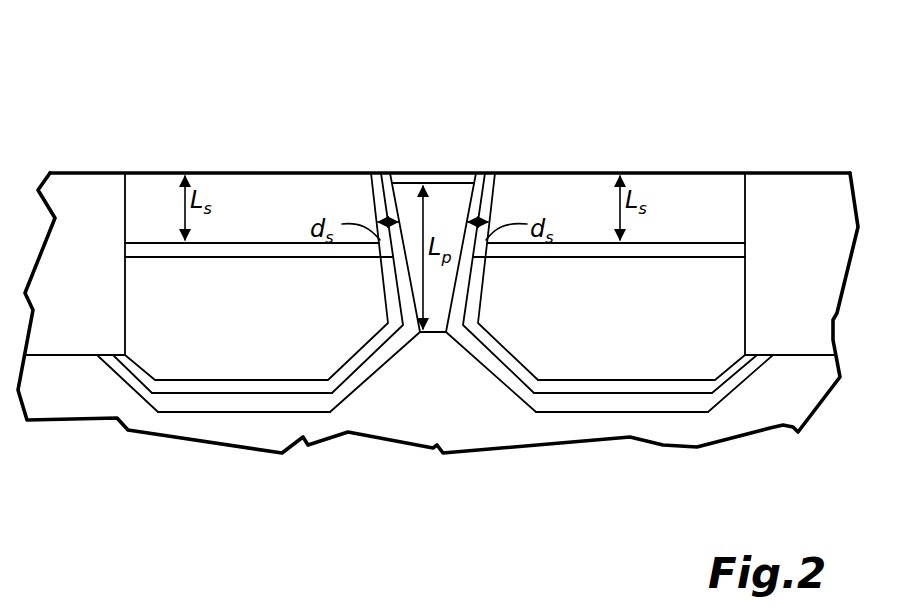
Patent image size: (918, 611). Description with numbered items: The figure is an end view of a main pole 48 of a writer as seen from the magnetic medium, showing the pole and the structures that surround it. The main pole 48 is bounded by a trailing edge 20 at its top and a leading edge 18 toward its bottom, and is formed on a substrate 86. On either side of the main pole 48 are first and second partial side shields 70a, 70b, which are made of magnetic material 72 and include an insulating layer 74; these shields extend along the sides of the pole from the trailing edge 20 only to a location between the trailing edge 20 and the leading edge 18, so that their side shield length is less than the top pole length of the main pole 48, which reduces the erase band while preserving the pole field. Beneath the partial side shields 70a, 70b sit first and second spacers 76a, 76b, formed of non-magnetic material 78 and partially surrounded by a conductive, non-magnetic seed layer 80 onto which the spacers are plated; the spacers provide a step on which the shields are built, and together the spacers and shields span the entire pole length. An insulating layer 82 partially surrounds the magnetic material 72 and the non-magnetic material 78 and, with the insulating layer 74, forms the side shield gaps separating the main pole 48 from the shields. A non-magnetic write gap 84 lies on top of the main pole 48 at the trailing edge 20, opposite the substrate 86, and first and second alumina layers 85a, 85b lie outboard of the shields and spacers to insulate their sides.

The leading edge 18 is at (482, 482).
The trailing edge 20 is at (450, 92).
The main pole 48 is at (453, 173).
The first partial side shield 70a is at (148, 213).
The second partial side shield 70b is at (711, 197).
The magnetic material 72 is at (236, 183).
The insulating layer 74 is at (372, 173).
The first spacer 76a is at (253, 358).
The second spacer 76b is at (553, 348).
The non-magnetic material 78 is at (262, 322).
The seed layer 80 is at (353, 367).
The insulating layer 82 is at (177, 400).
The write gap 84 is at (418, 173).
The first alumina layer 85a is at (90, 236).
The second alumina layer 85b is at (780, 210).
The substrate 86 is at (452, 404).